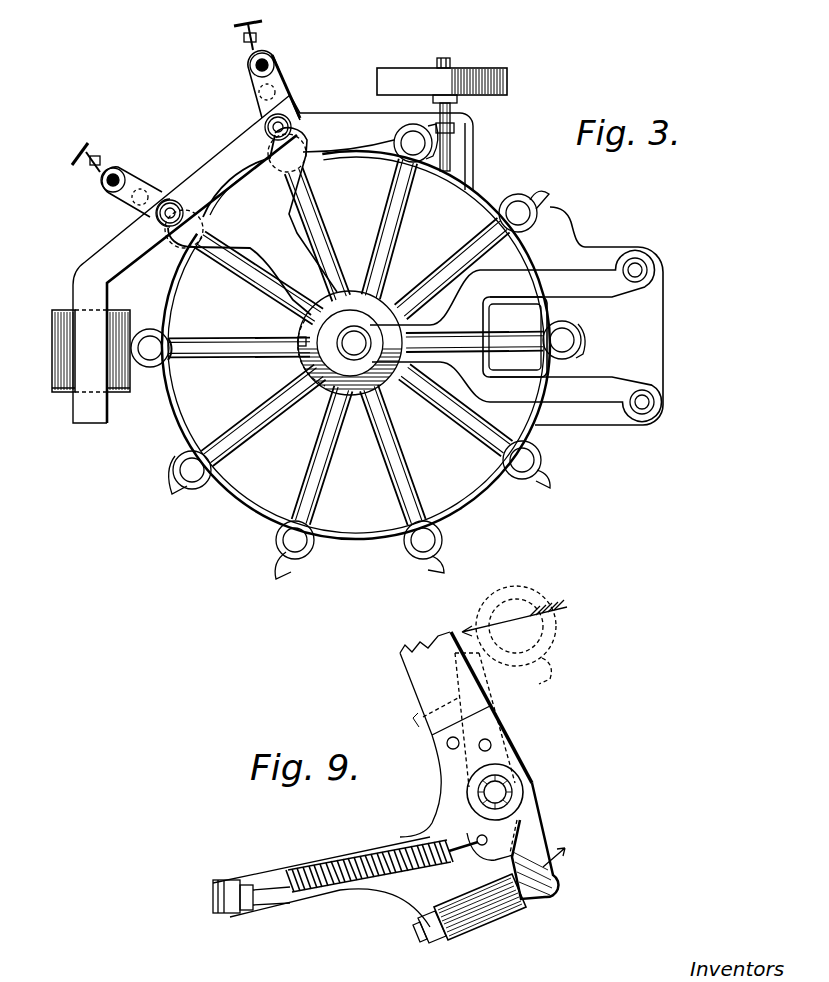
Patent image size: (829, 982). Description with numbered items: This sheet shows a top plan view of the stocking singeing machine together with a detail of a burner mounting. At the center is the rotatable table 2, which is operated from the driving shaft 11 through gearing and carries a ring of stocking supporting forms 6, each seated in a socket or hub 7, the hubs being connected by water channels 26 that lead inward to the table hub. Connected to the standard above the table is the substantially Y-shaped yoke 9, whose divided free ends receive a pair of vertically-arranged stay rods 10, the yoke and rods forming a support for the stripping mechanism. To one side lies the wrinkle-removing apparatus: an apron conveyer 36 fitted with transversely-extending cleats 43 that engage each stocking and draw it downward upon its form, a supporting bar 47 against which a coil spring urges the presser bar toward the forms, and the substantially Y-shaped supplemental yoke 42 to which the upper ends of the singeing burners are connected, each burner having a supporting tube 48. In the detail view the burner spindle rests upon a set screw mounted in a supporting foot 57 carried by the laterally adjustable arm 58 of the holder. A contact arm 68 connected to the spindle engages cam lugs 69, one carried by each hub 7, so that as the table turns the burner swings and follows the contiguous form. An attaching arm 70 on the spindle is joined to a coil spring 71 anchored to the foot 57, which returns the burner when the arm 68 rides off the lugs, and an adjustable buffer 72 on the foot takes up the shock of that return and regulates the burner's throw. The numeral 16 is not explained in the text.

In FIG. 3, the rotatable table 2 is at (356, 345).
In FIG. 3, the supporting forms 6 is at (405, 143).
In FIG. 3, the hub 7 is at (575, 333).
In FIG. 3, the yoke 9 is at (516, 316).
In FIG. 3, the stay rods 10 is at (639, 266).
In FIG. 3, the driving shaft 11 is at (455, 105).
In FIG. 3, the spoke rod 16 is at (385, 243).
In FIG. 3, the channels 26 is at (383, 272).
In FIG. 3, the apron conveyer 36 is at (70, 355).
In FIG. 3, the supplemental yoke 42 is at (246, 221).
In FIG. 3, the cleats 43 is at (58, 392).
In FIG. 3, the supporting bar 47 is at (273, 259).
In FIG. 3, the supporting tube 48 is at (270, 63).
In FIG. 3, the contact arm 68 is at (296, 103).
In FIG. 9, the contact arm 68 is at (493, 703).
In FIG. 3, the cam lugs 69 is at (583, 346).
In FIG. 9, the cam lugs 69 is at (545, 678).
In FIG. 9, the supporting foot 57 is at (453, 802).
In FIG. 9, the laterally adjustable arm 58 is at (423, 697).
In FIG. 9, the attaching arm 70 is at (535, 838).
In FIG. 9, the coil spring 71 is at (350, 858).
In FIG. 9, the adjustable buffer 72 is at (512, 920).